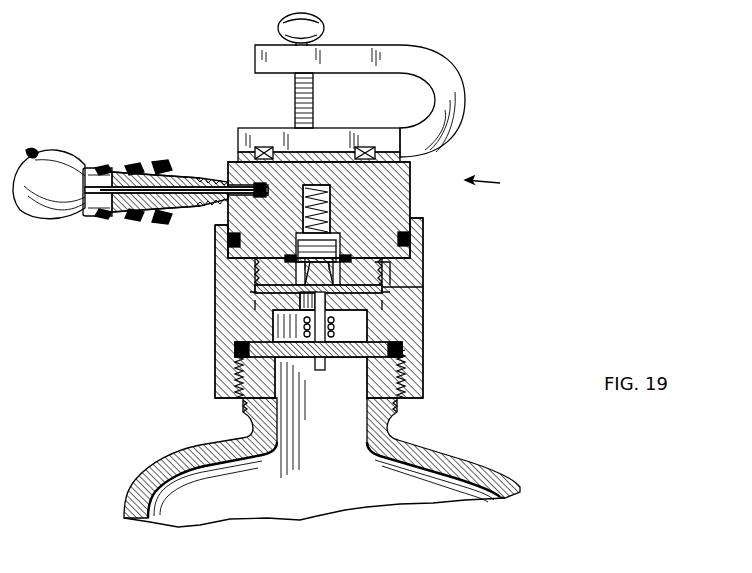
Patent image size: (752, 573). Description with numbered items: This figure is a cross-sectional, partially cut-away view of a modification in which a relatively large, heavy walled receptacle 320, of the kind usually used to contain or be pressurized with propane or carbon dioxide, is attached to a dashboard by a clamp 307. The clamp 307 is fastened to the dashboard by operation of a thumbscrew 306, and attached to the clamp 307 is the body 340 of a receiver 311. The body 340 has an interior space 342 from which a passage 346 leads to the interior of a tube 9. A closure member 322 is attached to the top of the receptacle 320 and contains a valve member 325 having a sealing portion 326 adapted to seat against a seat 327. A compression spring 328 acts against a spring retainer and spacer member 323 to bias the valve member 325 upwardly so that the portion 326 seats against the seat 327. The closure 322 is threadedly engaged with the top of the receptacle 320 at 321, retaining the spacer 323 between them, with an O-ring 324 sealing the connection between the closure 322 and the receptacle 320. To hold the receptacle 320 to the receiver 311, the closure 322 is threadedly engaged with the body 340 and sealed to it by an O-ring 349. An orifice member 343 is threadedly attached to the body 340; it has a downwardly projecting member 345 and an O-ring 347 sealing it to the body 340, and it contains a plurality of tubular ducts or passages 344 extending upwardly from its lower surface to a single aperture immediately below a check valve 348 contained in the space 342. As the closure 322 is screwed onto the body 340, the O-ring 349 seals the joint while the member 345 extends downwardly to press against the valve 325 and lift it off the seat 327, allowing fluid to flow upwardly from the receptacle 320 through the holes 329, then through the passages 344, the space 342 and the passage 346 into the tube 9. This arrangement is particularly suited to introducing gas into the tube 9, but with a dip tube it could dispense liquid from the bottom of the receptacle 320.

The tube 9 is at (53, 160).
The thumbscrew 306 is at (314, 100).
The clamp 307 is at (460, 95).
The receiver 311 is at (495, 185).
The receptacle 320 is at (185, 466).
The threaded engagement 321 is at (240, 412).
The closure member 322 is at (424, 292).
The spring retainer and spacer member 323 is at (403, 381).
The O-ring 324 is at (240, 348).
The valve member 325 is at (320, 374).
The sealing portion 326 is at (367, 313).
The seat 327 is at (302, 305).
The compression spring 328 is at (305, 340).
The holes 329 is at (340, 356).
The body 340 is at (405, 173).
The interior space 342 is at (338, 226).
The orifice member 343 is at (385, 274).
The tubular ducts or passages 344 is at (390, 282).
The downwardly projecting member 345 is at (295, 298).
The passage 346 is at (282, 192).
The O-ring 347 is at (258, 262).
The check valve 348 is at (298, 248).
The O-ring 349 is at (228, 240).